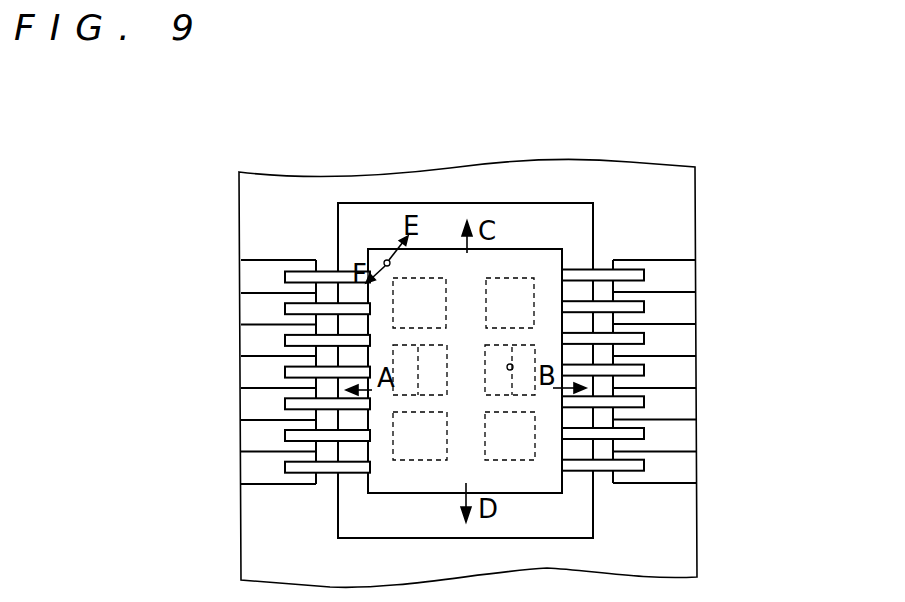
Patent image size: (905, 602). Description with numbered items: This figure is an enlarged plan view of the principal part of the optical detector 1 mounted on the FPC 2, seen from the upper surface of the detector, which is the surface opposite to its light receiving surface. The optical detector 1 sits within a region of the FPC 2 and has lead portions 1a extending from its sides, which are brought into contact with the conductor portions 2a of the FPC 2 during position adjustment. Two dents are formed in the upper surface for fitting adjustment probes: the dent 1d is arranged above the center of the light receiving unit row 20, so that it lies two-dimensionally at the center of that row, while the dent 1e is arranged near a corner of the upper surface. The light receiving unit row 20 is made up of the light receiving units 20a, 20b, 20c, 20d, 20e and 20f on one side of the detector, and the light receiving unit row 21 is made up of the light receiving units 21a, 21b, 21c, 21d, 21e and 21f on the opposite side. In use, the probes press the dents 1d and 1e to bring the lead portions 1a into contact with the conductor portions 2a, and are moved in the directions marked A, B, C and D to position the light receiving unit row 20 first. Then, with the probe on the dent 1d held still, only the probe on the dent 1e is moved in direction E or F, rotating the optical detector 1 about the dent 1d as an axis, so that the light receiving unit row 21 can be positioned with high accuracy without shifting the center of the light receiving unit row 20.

The optical detector 1 is at (437, 262).
The lead portions 1a is at (578, 270).
The dent 1d is at (507, 367).
The dent 1e is at (370, 247).
The FPC 2 is at (300, 198).
The conductor portions 2a is at (660, 265).
The light receiving unit row 20 is at (817, 258).
The light receiving unit 20a is at (513, 347).
The light receiving unit 20b is at (520, 412).
The light receiving unit 20c is at (535, 402).
The light receiving unit 20d is at (540, 362).
The light receiving unit 20e is at (534, 282).
The light receiving unit 20f is at (535, 448).
The light receiving unit row 21 is at (117, 267).
The light receiving unit 21a is at (395, 365).
The light receiving unit 21b is at (412, 346).
The light receiving unit 21c is at (393, 418).
The light receiving unit 21d is at (400, 420).
The light receiving unit 21e is at (393, 287).
The light receiving unit 21f is at (393, 450).